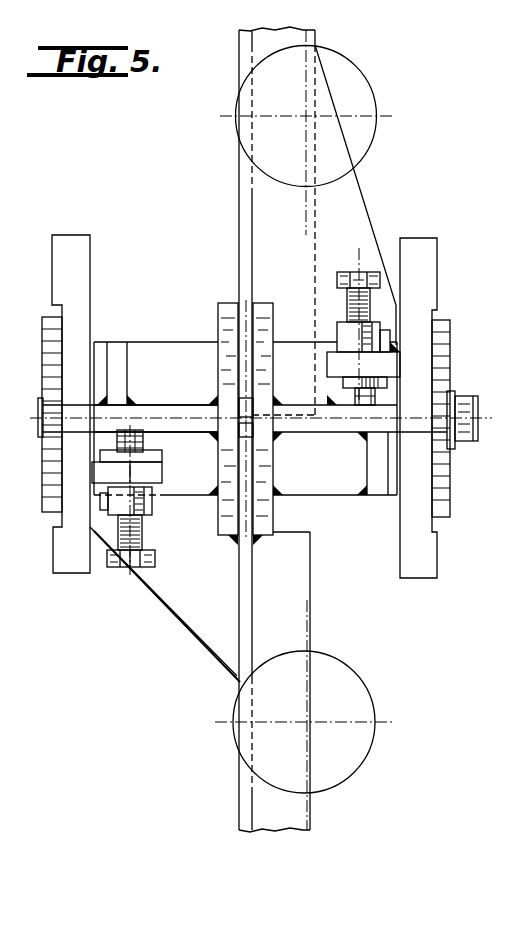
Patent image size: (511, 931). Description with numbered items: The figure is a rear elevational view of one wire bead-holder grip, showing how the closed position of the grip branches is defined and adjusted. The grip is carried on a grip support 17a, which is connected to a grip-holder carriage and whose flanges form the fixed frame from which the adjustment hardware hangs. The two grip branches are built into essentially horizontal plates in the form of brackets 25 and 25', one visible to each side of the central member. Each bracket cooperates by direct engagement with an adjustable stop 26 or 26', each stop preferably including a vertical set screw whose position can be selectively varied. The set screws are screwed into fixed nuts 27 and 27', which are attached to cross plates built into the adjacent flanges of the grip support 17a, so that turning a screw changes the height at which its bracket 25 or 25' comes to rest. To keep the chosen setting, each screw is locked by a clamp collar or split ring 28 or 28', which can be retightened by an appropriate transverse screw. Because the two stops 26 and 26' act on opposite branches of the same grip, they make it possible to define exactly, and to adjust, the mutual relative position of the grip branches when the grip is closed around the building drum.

The grip support 17a is at (62, 560).
The bracket 25 is at (258, 418).
The bracket 25' is at (156, 418).
The adjustable stop 26 is at (375, 305).
The adjustable stop 26' is at (164, 544).
The fixed nut 27 is at (338, 346).
The fixed nut 27' is at (154, 500).
The split ring 28 is at (338, 302).
The split ring 28' is at (149, 503).